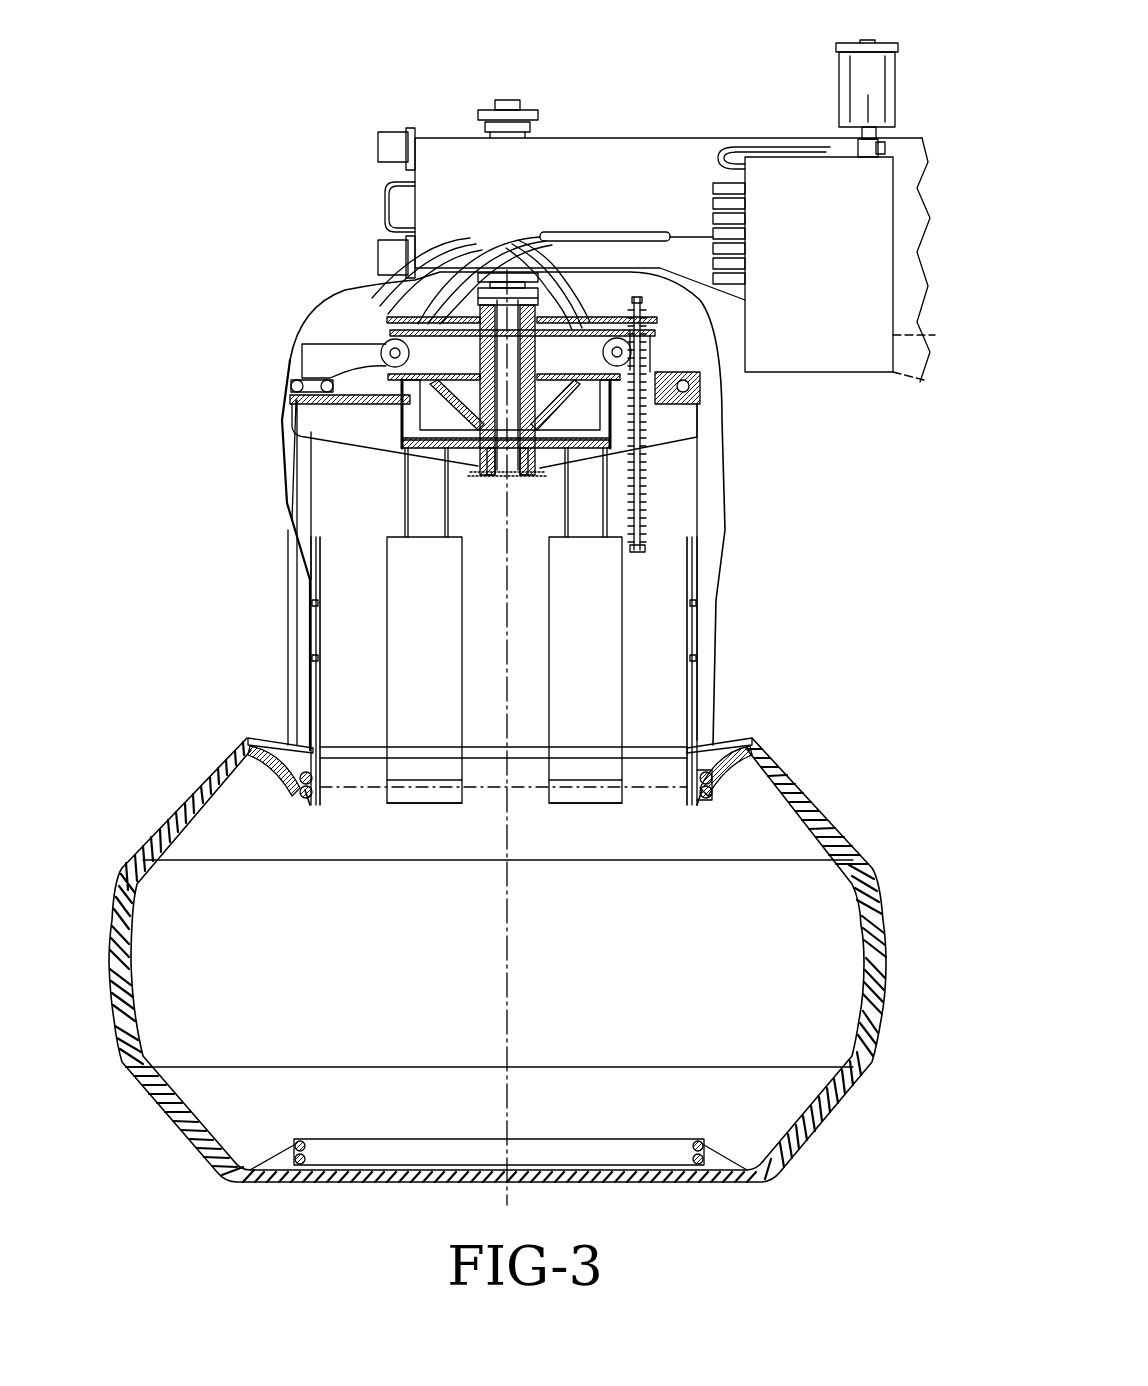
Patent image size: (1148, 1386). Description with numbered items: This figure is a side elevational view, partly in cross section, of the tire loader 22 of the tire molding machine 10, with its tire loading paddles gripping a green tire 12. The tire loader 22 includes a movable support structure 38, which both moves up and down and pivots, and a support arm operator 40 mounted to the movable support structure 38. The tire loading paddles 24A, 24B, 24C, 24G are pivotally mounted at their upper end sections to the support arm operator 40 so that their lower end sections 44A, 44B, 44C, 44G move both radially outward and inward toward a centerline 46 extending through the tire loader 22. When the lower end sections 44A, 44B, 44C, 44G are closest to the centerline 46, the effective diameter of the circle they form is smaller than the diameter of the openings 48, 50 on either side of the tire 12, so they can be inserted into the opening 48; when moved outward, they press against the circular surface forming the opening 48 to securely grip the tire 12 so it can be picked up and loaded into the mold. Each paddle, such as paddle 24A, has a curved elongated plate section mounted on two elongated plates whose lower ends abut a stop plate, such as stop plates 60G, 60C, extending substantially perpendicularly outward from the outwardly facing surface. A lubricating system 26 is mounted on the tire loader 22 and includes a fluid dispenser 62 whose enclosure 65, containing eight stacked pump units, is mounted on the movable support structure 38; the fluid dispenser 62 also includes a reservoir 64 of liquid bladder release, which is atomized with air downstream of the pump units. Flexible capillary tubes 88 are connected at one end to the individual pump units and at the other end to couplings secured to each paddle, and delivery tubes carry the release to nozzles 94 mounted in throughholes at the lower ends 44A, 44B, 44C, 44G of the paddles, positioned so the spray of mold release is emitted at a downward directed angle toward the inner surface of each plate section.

The tire molding machine 10 is at (566, 90).
The movable support structure 38 is at (610, 165).
The lubricating system 26 is at (700, 166).
The reservoir 64 is at (862, 73).
The enclosure 65 is at (782, 183).
The fluid dispenser 62 is at (804, 279).
The tire loader 22 is at (328, 244).
The support arm operator 40 is at (366, 324).
The lower end section 44G is at (320, 362).
The lower end section 44C is at (697, 357).
The flexible capillary tubes 88 is at (290, 537).
The tire loading paddle 24G is at (313, 635).
The tire loading paddle 24C is at (697, 635).
The tire loading paddle 24A is at (415, 645).
The tire loading paddle 24B is at (592, 645).
The nozzle 94 is at (430, 752).
The stop plate 60G is at (258, 740).
The stop plate 60C is at (745, 740).
The green tire 12 is at (810, 796).
The lower end section 44A is at (425, 805).
The lower end section 44B is at (588, 805).
The opening 48 is at (712, 782).
The centerline 46 is at (507, 1000).
The opening 50 is at (306, 1152).